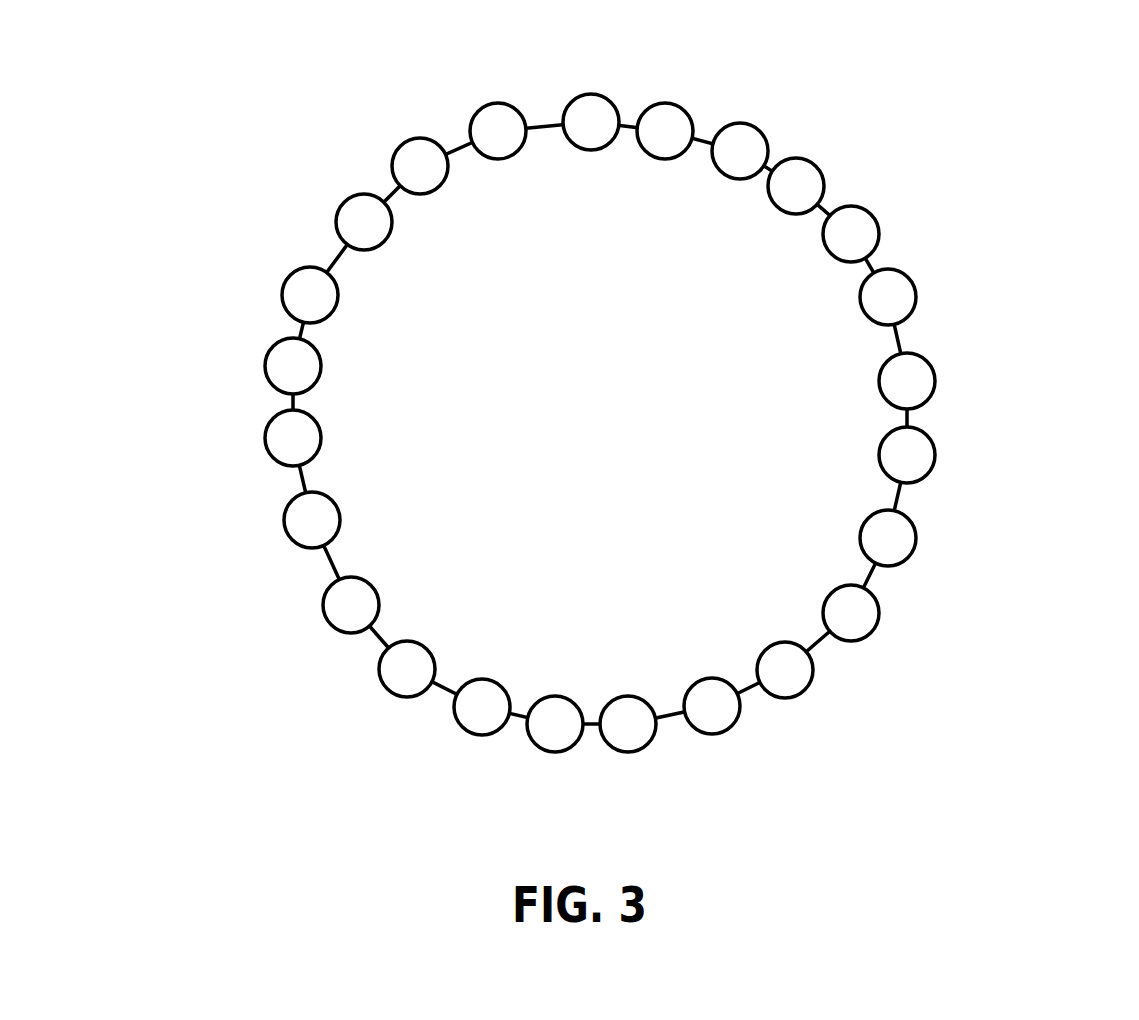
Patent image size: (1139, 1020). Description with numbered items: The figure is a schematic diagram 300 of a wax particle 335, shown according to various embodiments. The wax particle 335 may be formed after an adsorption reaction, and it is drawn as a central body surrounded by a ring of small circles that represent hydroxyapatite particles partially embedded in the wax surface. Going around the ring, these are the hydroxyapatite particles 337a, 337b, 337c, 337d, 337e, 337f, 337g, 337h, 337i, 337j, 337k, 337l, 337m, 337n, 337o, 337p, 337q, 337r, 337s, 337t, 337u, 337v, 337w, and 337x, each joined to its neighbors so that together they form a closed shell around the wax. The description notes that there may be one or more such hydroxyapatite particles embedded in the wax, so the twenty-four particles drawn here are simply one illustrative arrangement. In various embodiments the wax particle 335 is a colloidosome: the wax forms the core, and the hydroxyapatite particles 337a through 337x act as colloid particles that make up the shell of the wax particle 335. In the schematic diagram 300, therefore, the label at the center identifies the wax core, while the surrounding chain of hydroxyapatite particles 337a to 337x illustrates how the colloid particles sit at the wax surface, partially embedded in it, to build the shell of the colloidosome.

The schematic diagram 300 is at (1033, 108).
The wax particle 335 is at (773, 446).
The hydroxyapatite particle 337a is at (590, 94).
The hydroxyapatite particle 337b is at (682, 105).
The hydroxyapatite particle 337c is at (762, 133).
The hydroxyapatite particle 337d is at (815, 163).
The hydroxyapatite particle 337e is at (872, 210).
The hydroxyapatite particle 337f is at (917, 287).
The hydroxyapatite particle 337g is at (937, 372).
The hydroxyapatite particle 337h is at (937, 455).
The hydroxyapatite particle 337i is at (912, 556).
The hydroxyapatite particle 337j is at (876, 627).
The hydroxyapatite particle 337k is at (807, 688).
The hydroxyapatite particle 337l is at (722, 733).
The hydroxyapatite particle 337m is at (635, 753).
The hydroxyapatite particle 337n is at (553, 753).
The hydroxyapatite particle 337o is at (465, 733).
The hydroxyapatite particle 337p is at (380, 688).
The hydroxyapatite particle 337q is at (323, 610).
The hydroxyapatite particle 337r is at (285, 533).
The hydroxyapatite particle 337s is at (267, 440).
The hydroxyapatite particle 337t is at (267, 363).
The hydroxyapatite particle 337u is at (285, 290).
The hydroxyapatite particle 337v is at (338, 210).
The hydroxyapatite particle 337w is at (398, 147).
The hydroxyapatite particle 337x is at (480, 107).